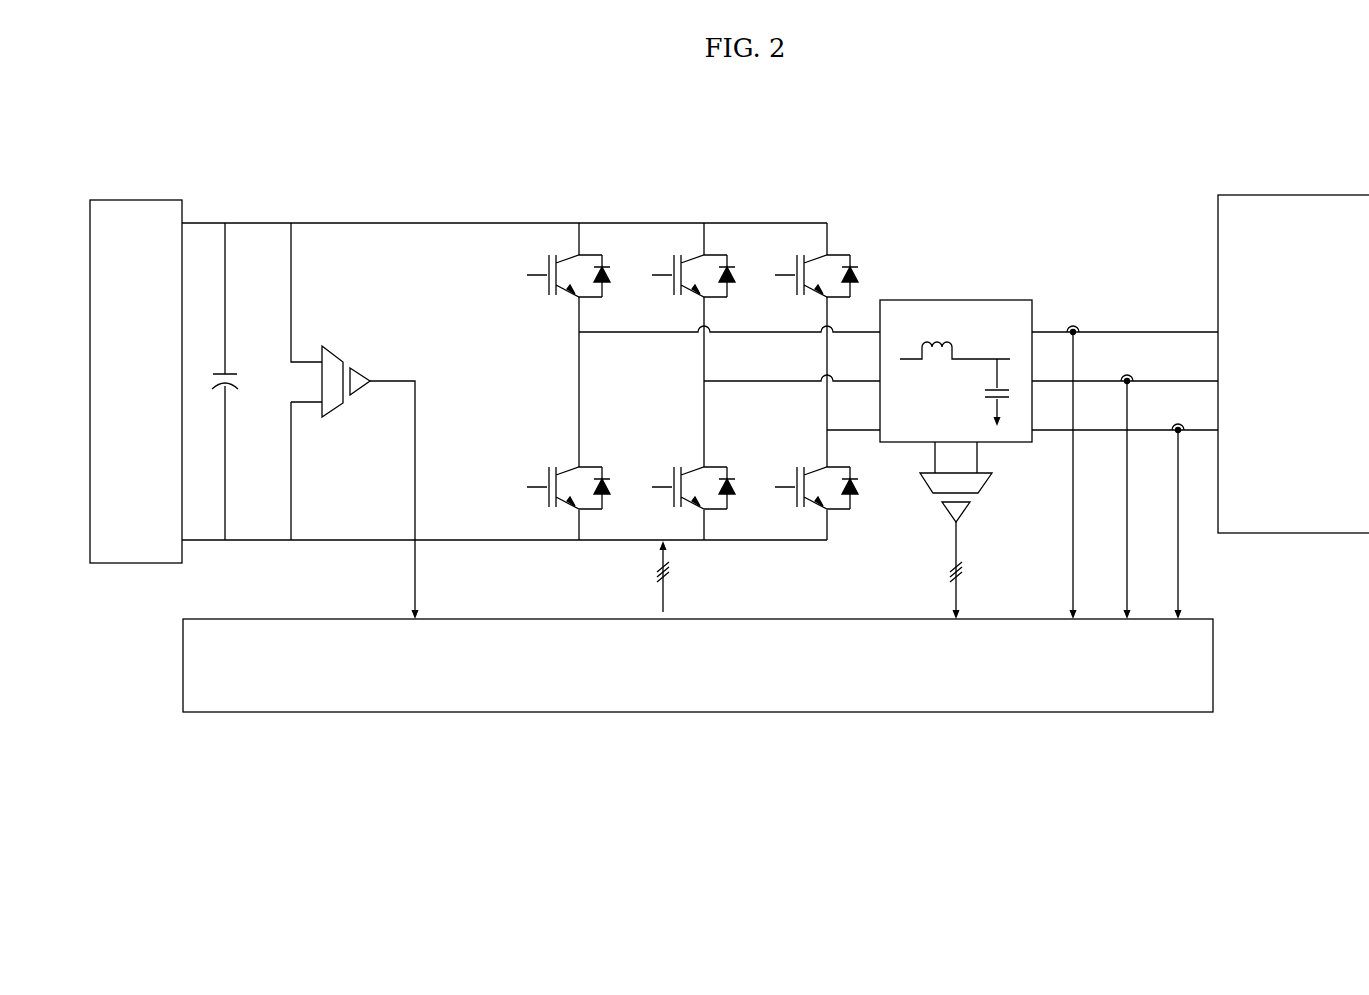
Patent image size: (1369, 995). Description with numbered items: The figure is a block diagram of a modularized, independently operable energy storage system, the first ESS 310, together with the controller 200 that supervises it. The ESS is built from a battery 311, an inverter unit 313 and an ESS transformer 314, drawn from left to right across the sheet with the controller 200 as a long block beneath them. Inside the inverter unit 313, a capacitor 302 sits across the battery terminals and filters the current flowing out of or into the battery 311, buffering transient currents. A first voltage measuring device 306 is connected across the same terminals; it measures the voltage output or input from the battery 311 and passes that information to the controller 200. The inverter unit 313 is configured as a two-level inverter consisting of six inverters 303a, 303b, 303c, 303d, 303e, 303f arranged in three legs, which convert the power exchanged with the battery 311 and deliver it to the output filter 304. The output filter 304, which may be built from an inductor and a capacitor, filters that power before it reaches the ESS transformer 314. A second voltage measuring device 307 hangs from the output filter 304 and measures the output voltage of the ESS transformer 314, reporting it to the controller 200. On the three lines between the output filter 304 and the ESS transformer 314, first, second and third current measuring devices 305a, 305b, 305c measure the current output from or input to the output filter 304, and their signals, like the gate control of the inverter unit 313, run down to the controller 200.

The controller 200 is at (695, 712).
The first ESS 310 is at (466, 634).
The battery 311 is at (135, 198).
The capacitor 302 is at (211, 381).
The first voltage measuring device 306 is at (355, 421).
The inverter unit 313 is at (683, 366).
The inverter 303a is at (559, 263).
The inverter 303b is at (559, 475).
The inverter 303c is at (685, 263).
The inverter 303d is at (684, 475).
The inverter 303e is at (807, 263).
The inverter 303f is at (810, 475).
The output filter 304 is at (956, 357).
The second voltage measuring device 307 is at (949, 530).
The first current measuring device 305a is at (1073, 459).
The second current measuring device 305b is at (1127, 484).
The third current measuring device 305c is at (1178, 509).
The ESS transformer 314 is at (1290, 195).